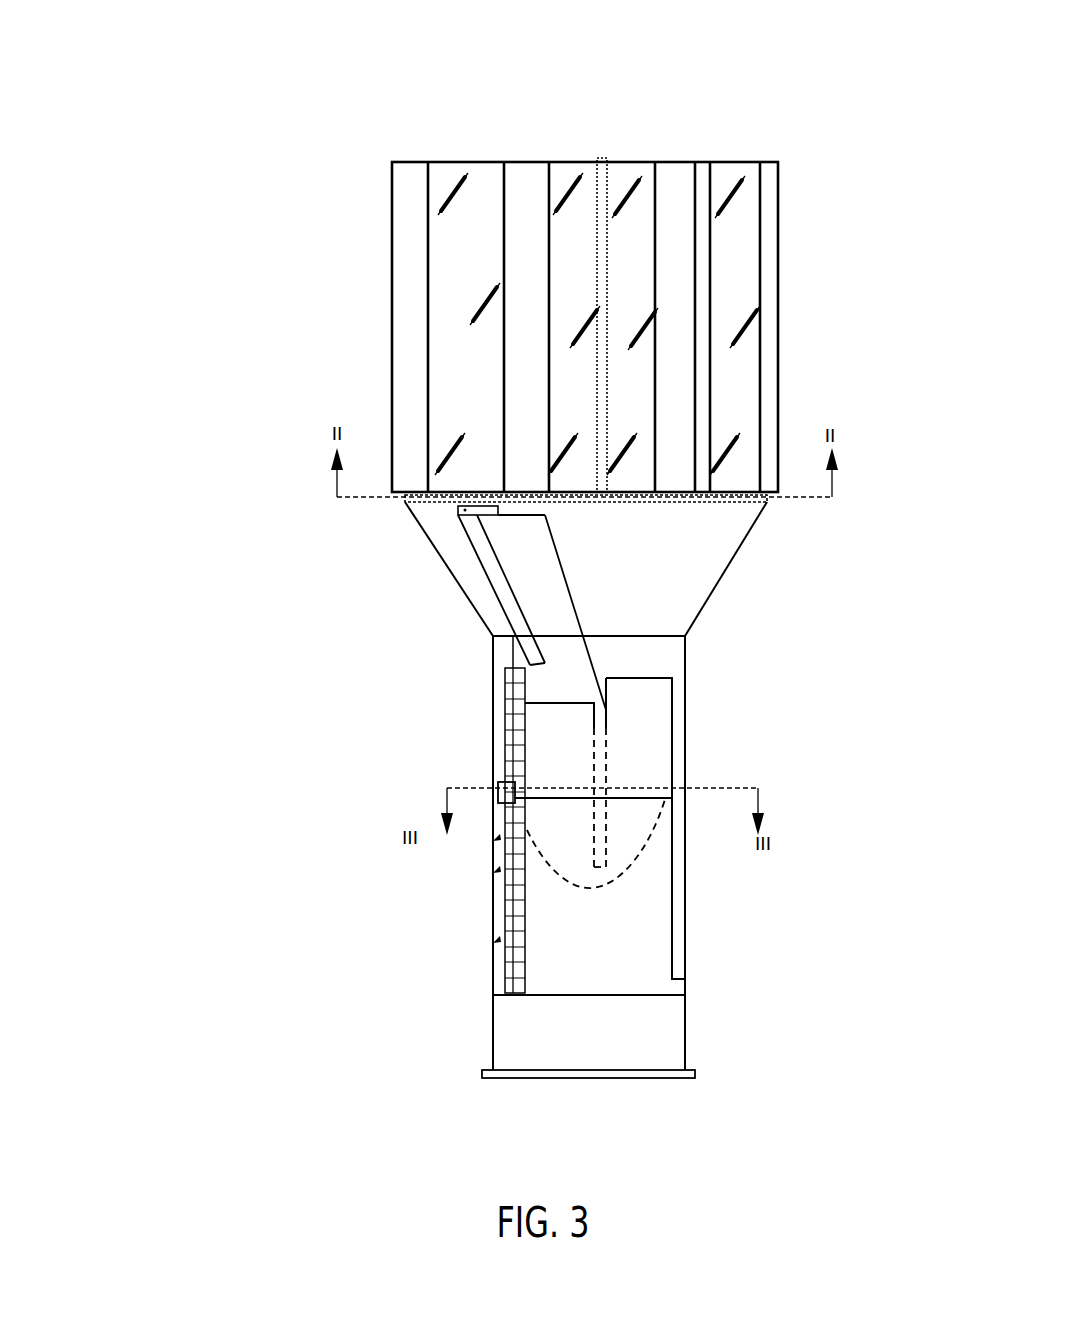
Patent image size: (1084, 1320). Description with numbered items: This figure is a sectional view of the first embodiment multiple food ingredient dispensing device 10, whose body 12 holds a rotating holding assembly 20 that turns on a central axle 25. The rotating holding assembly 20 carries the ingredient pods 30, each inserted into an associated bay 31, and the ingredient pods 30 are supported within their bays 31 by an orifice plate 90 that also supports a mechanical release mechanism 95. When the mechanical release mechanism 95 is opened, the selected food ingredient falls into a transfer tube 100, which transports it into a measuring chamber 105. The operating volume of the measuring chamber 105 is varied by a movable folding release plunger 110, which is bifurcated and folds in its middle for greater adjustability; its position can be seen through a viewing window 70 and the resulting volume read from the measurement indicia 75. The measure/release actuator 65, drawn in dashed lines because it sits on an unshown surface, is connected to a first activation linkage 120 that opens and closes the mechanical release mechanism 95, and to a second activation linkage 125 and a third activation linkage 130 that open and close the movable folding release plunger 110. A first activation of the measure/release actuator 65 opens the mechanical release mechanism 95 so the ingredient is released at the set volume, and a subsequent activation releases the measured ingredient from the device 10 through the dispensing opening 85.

The multiple food ingredient dispensing device 10 is at (166, 168).
The body 12 is at (724, 580).
The rotating holding assembly 20 is at (774, 193).
The central axle 25 is at (602, 157).
The ingredient pod 30 is at (448, 272).
The bay 31 is at (427, 185).
The measure/release actuator 65 is at (603, 845).
The viewing window 70 is at (497, 838).
The measurement indicia 75 is at (503, 878).
The dispensing opening 85 is at (591, 1084).
The orifice plate 90 is at (717, 503).
The mechanical release mechanism 95 is at (465, 511).
The transfer tube 100 is at (493, 592).
The measuring chamber 105 is at (645, 669).
The movable folding release plunger 110 is at (672, 699).
The first activation linkage 120 is at (567, 577).
The second activation linkage 125 is at (625, 787).
The third activation linkage 130 is at (510, 708).